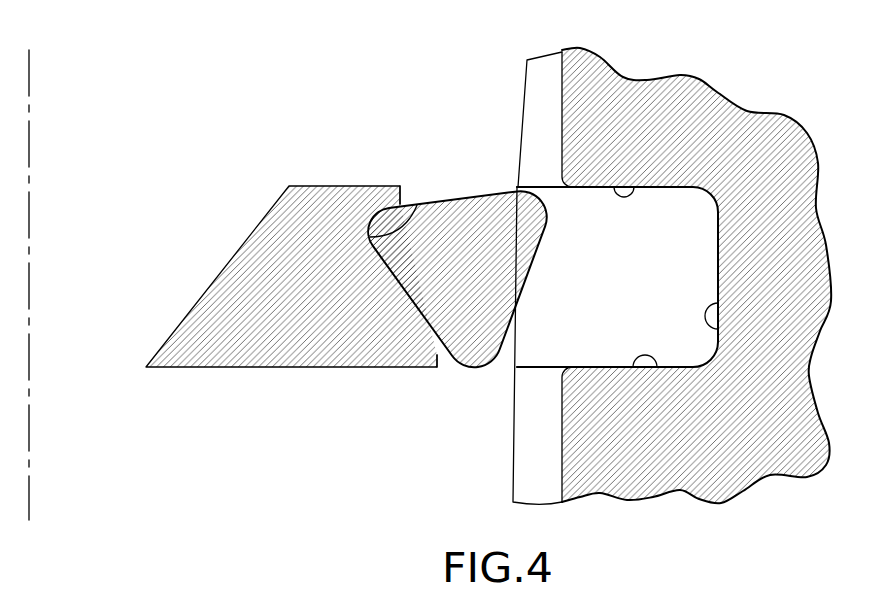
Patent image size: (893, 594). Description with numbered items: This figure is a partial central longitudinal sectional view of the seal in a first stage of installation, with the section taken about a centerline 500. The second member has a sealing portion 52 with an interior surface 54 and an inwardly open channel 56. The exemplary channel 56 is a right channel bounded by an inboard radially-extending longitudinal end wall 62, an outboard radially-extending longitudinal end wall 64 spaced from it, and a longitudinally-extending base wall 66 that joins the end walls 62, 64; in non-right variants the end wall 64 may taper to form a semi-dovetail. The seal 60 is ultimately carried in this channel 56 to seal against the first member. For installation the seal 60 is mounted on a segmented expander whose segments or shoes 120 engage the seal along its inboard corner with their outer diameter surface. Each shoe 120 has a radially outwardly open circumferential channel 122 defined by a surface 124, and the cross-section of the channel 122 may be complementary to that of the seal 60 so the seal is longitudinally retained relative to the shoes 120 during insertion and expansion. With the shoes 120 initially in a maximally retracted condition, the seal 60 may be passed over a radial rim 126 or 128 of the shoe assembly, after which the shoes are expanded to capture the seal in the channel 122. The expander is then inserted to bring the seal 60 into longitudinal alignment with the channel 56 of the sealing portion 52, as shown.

The sealing portion 52 is at (792, 163).
The interior surface 54 is at (560, 120).
The inwardly open channel 56 is at (555, 320).
The seal 60 is at (498, 260).
The inboard radially-extending longitudinal end wall 62 is at (633, 187).
The outboard radially-extending longitudinal end wall 64 is at (633, 367).
The longitudinally-extending base wall 66 is at (718, 329).
The shoe 120 is at (236, 345).
The radially outwardly open circumferential channel 122 is at (410, 275).
The surface 124 is at (417, 207).
The radial rim 126 is at (438, 358).
The radial rim 128 is at (405, 194).
The central axis 500 is at (29, 242).